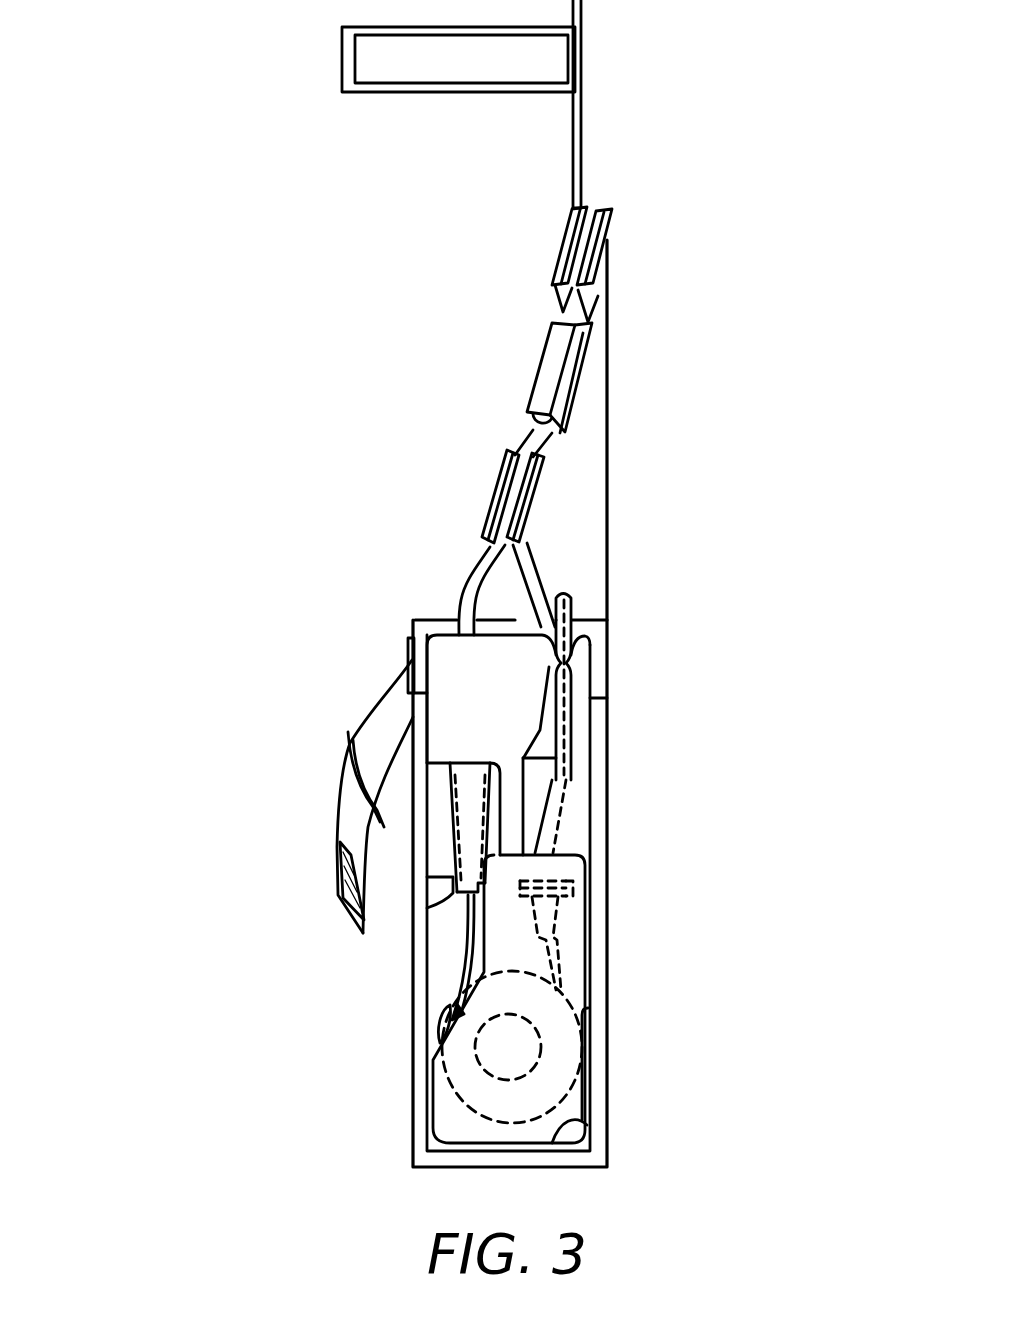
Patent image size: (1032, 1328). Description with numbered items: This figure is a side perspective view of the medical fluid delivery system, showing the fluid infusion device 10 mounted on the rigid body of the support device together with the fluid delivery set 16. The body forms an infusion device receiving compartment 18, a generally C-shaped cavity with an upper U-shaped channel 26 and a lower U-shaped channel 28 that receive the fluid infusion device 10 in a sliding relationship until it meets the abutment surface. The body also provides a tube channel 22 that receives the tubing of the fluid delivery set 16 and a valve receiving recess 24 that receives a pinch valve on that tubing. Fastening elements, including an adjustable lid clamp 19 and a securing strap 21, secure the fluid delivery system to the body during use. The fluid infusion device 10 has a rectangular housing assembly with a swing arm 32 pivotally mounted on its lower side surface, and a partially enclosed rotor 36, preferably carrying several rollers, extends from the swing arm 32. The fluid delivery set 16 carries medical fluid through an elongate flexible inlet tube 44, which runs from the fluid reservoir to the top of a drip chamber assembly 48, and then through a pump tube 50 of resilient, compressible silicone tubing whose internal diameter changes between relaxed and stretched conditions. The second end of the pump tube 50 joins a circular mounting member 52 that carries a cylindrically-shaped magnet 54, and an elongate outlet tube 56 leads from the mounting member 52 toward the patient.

The fluid infusion device 10 is at (575, 1050).
The fluid delivery set 16 is at (468, 578).
The infusion device receiving compartment 18 is at (560, 1130).
The adjustable lid clamp 19 is at (343, 88).
The securing strap 21 is at (344, 818).
The tube channel 22 is at (592, 210).
The valve receiving recess 24 is at (550, 466).
The upper U-shaped channel 26 is at (407, 657).
The lower U-shaped channel 28 is at (425, 1132).
The swing arm 32 is at (522, 673).
The rotor 36 is at (436, 1026).
The inlet tube 44 is at (457, 607).
The drip chamber assembly 48 is at (460, 795).
The pump tube 50 is at (455, 997).
The mounting member 52 is at (568, 879).
The magnet 54 is at (567, 898).
The outlet tube 56 is at (572, 606).